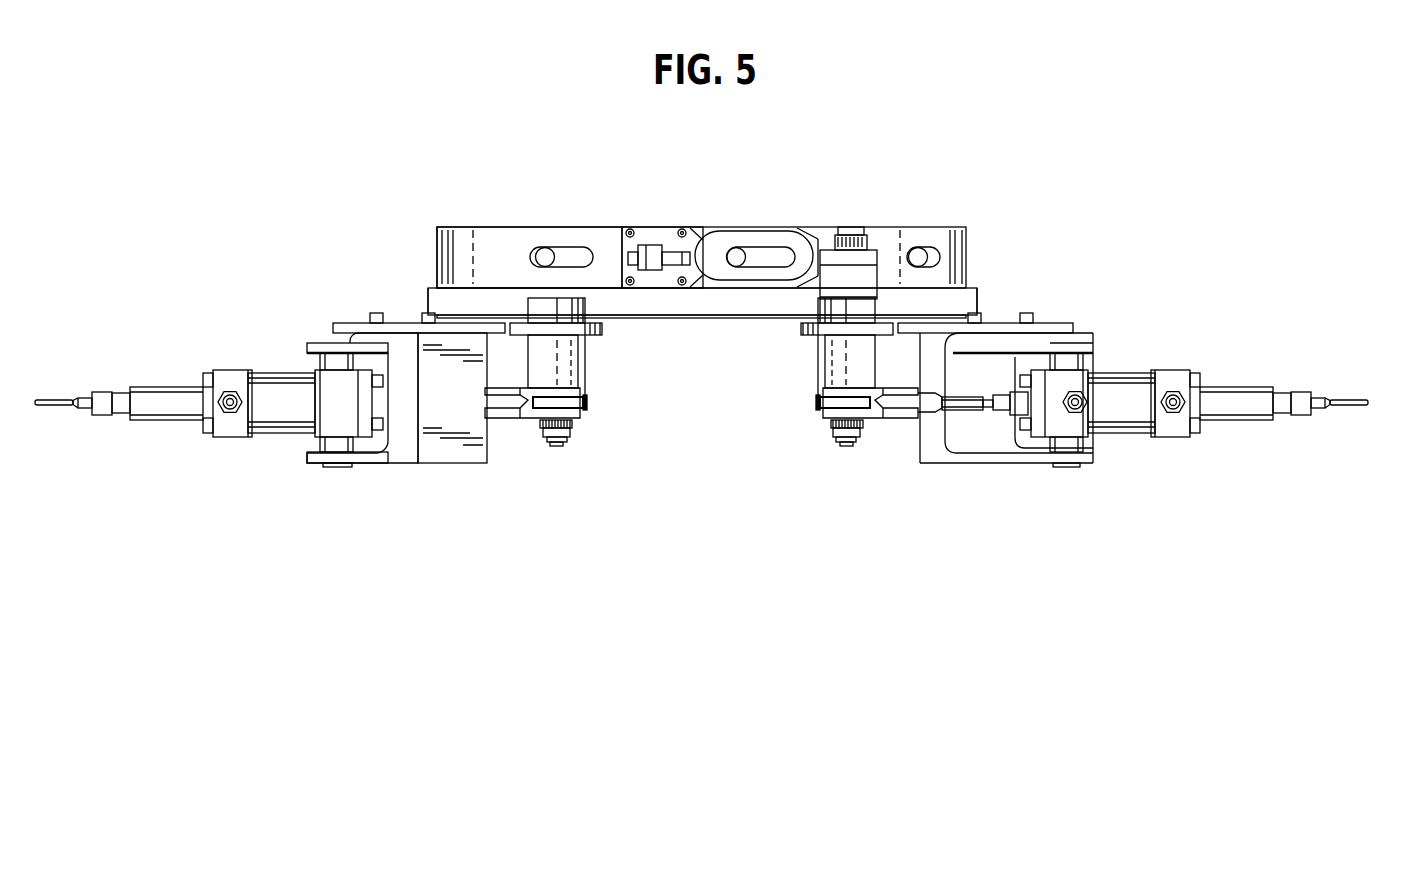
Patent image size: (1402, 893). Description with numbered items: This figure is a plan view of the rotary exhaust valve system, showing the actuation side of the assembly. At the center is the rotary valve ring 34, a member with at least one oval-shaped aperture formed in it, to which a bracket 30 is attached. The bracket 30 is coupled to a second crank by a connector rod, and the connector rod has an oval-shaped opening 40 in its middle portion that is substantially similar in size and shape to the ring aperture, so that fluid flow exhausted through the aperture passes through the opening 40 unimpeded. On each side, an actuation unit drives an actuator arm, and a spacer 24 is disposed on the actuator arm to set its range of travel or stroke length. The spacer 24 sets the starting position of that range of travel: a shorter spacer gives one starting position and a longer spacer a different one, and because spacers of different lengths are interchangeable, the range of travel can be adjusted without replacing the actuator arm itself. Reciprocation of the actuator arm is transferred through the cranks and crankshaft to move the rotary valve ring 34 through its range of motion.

The spacer 24 is at (965, 403).
The bracket 30 is at (650, 233).
The rotary valve ring 34 is at (480, 235).
The oval-shaped opening 40 is at (795, 243).